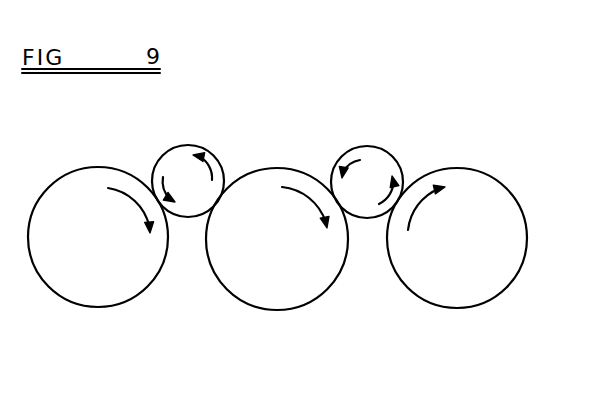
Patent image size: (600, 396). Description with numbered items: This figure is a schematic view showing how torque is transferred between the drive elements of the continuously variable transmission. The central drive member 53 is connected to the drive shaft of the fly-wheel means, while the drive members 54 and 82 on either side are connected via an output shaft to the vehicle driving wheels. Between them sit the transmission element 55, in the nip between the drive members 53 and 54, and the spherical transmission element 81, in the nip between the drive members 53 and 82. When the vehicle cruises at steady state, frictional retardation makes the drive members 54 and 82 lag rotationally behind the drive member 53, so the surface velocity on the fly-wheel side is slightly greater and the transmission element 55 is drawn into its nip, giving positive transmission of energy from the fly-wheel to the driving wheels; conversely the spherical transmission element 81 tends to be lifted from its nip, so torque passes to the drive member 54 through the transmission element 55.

The drive member 53 is at (292, 297).
The drive member 54 is at (477, 293).
The transmission element 55 is at (342, 153).
The spherical transmission element 81 is at (165, 155).
The drive member 82 is at (122, 295).